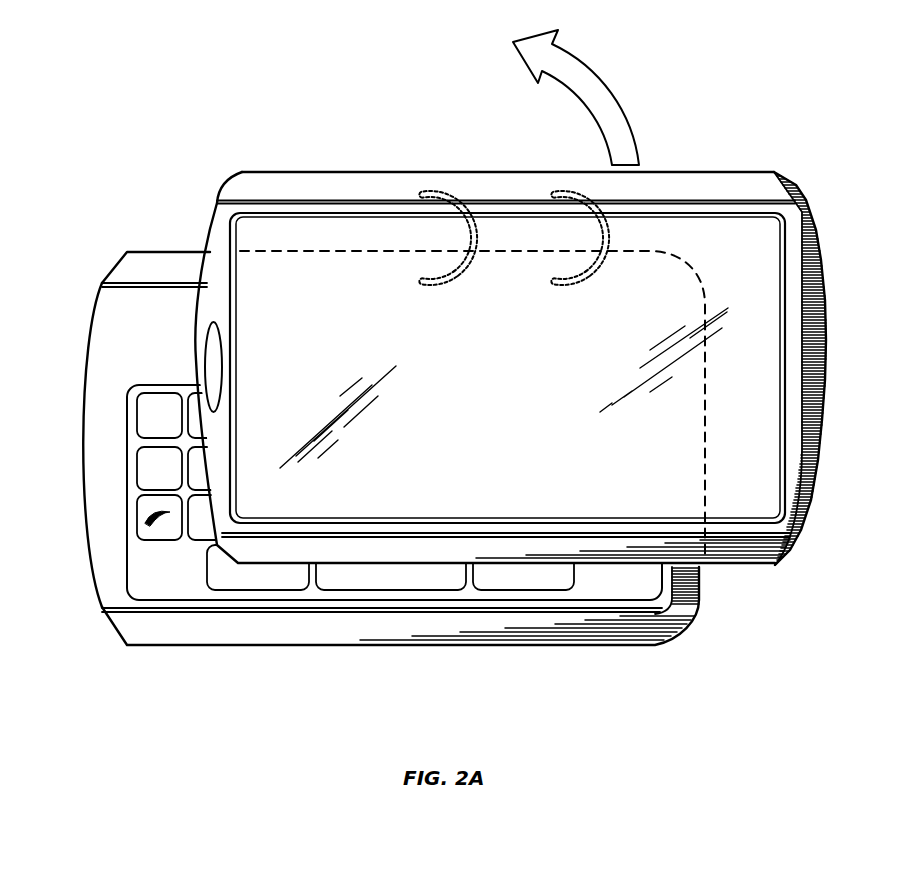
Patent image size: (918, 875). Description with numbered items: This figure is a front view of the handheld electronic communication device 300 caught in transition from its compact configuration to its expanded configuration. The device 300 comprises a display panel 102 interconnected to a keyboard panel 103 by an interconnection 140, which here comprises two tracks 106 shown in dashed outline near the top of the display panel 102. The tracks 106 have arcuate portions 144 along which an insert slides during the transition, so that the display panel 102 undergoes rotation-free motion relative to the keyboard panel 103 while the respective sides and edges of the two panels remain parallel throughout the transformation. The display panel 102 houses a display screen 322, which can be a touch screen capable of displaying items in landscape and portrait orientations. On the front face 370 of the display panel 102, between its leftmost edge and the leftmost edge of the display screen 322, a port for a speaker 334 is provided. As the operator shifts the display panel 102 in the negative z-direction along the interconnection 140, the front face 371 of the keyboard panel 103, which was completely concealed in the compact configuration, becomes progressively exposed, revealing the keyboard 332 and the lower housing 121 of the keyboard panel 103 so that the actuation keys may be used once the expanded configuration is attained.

The handheld electronic communication device 300 is at (244, 77).
The display panel 102 is at (670, 183).
The keyboard panel 103 is at (233, 632).
The second housing (keyboard housing) 121 is at (121, 164).
The track 106 is at (428, 191).
The interconnection 140 is at (484, 114).
The arcuate portion 144 is at (462, 283).
The display screen 322 is at (756, 240).
The keyboard 332 is at (142, 560).
The speaker 334 is at (212, 368).
The front face of the display panel 370 is at (727, 200).
The front face of the keyboard panel 371 is at (111, 356).